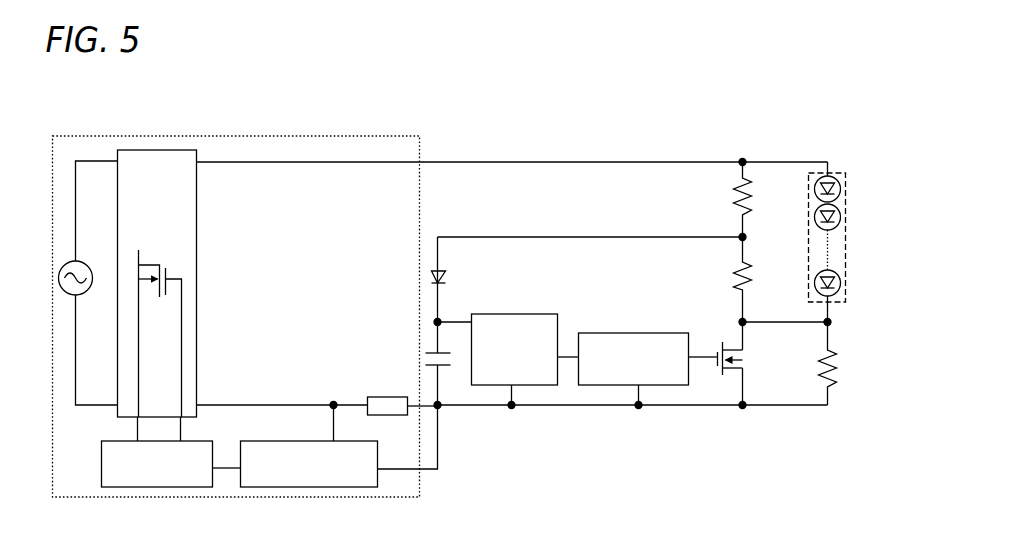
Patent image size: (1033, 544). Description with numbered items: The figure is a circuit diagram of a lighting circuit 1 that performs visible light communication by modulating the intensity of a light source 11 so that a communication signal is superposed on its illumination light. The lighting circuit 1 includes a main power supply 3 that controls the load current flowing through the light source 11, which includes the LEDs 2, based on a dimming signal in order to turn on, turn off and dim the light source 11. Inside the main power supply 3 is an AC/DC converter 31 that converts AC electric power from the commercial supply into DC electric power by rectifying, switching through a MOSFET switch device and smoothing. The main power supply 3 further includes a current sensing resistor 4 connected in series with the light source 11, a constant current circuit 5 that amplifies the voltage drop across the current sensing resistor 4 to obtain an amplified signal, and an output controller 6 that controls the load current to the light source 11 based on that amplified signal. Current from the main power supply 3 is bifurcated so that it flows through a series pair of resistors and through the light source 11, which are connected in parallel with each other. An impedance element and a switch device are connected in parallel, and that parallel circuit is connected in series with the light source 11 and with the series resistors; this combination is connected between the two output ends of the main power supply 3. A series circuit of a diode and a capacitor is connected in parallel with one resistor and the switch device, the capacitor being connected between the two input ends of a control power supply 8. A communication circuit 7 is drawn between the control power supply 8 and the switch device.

The lighting circuit 1 is at (61, 126).
The LED 2 is at (840, 190).
The main power supply 3 is at (377, 136).
The current sensing resistor 4 is at (386, 397).
The constant current circuit 5 is at (310, 487).
The output controller 6 is at (157, 487).
The communication circuit 7 is at (635, 333).
The control power supply 8 is at (530, 314).
The light source 11 is at (842, 232).
The AC/DC converter 31 is at (196, 200).